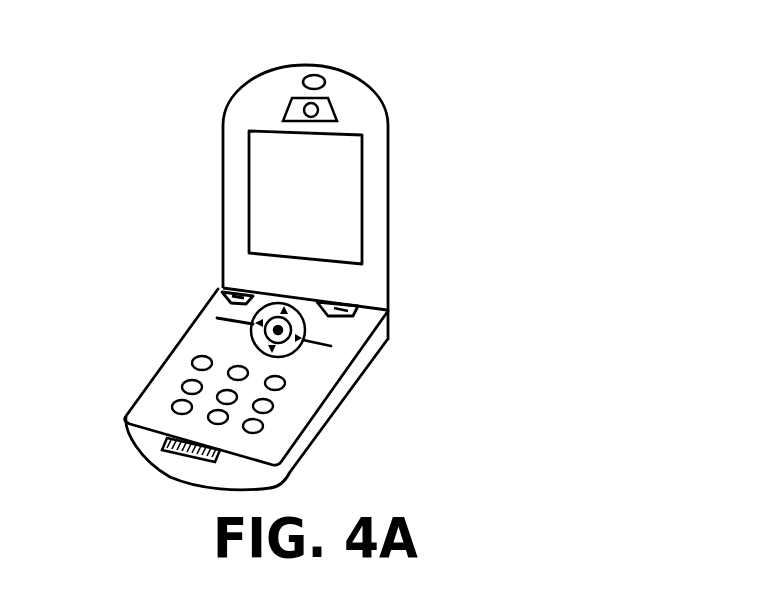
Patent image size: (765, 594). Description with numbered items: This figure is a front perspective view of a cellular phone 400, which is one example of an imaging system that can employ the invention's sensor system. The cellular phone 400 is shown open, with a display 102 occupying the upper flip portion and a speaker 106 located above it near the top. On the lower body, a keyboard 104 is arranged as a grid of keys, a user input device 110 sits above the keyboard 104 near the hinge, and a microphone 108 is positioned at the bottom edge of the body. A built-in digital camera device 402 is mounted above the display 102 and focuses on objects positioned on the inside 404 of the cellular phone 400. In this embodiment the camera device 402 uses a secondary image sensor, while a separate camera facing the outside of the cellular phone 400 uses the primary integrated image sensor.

The cellular phone 400 is at (338, 261).
The display 102 is at (258, 189).
The keyboard 104 is at (182, 362).
The speaker 106 is at (312, 79).
The microphone 108 is at (166, 442).
The user input device 110 is at (300, 343).
The built-in digital camera device 402 is at (283, 118).
The inside 404 is at (248, 270).